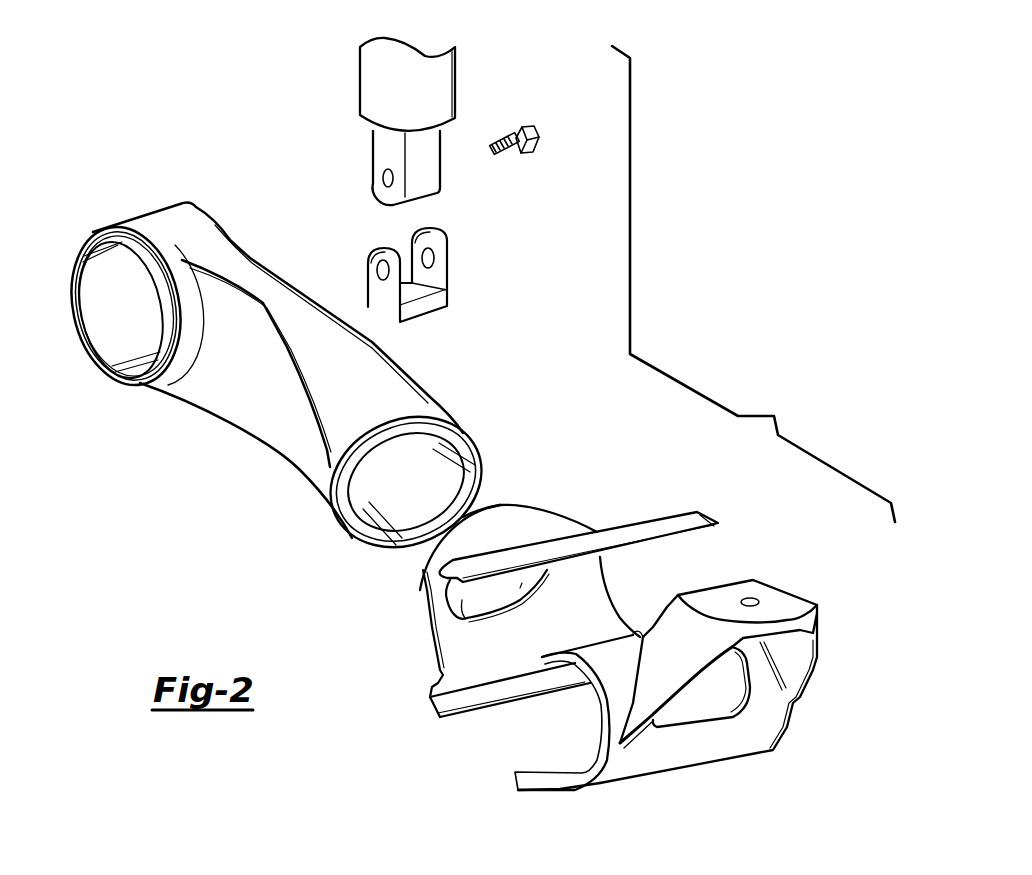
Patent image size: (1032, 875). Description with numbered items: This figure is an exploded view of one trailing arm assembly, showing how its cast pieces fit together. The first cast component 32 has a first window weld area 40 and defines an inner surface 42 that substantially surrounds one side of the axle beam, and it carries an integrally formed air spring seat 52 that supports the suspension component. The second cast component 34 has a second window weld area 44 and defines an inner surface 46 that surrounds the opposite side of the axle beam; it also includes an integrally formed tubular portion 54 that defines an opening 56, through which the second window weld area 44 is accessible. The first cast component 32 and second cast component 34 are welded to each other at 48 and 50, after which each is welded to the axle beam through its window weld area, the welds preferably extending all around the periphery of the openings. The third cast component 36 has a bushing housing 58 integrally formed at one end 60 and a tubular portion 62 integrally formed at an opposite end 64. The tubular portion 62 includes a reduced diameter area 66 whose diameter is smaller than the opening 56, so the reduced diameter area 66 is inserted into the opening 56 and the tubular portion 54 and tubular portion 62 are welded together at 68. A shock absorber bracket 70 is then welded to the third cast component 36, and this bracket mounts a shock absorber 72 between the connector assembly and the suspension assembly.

The first cast component 32 is at (708, 710).
The second cast component 34 is at (579, 524).
The third cast component 36 is at (278, 370).
The first window weld area 40 is at (705, 720).
The inner surface 42 is at (531, 712).
The second window weld area 44 is at (510, 623).
The inner surface 46 is at (644, 662).
The weld 48 is at (741, 501).
The weld 50 is at (511, 773).
The air spring seat 52 is at (747, 577).
The tubular portion 54 is at (530, 549).
The opening 56 is at (466, 643).
The bushing housing 58 is at (115, 310).
The one end 60 is at (126, 334).
The tubular portion 62 is at (406, 453).
The opposite end 64 is at (256, 384).
The reduced diameter area 66 is at (398, 482).
The weld 68 is at (485, 483).
The shock absorber bracket 70 is at (389, 274).
The shock absorber 72 is at (377, 121).